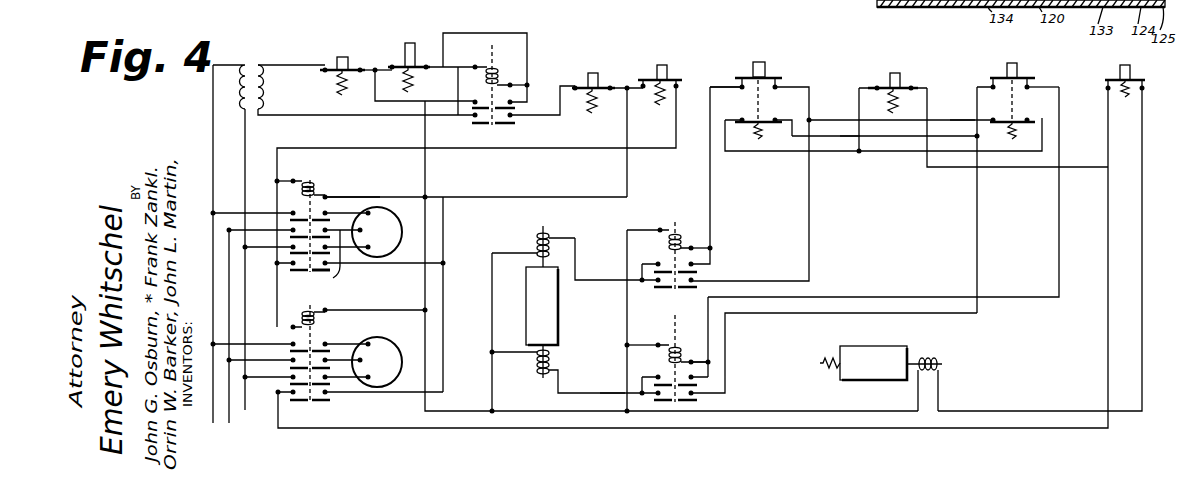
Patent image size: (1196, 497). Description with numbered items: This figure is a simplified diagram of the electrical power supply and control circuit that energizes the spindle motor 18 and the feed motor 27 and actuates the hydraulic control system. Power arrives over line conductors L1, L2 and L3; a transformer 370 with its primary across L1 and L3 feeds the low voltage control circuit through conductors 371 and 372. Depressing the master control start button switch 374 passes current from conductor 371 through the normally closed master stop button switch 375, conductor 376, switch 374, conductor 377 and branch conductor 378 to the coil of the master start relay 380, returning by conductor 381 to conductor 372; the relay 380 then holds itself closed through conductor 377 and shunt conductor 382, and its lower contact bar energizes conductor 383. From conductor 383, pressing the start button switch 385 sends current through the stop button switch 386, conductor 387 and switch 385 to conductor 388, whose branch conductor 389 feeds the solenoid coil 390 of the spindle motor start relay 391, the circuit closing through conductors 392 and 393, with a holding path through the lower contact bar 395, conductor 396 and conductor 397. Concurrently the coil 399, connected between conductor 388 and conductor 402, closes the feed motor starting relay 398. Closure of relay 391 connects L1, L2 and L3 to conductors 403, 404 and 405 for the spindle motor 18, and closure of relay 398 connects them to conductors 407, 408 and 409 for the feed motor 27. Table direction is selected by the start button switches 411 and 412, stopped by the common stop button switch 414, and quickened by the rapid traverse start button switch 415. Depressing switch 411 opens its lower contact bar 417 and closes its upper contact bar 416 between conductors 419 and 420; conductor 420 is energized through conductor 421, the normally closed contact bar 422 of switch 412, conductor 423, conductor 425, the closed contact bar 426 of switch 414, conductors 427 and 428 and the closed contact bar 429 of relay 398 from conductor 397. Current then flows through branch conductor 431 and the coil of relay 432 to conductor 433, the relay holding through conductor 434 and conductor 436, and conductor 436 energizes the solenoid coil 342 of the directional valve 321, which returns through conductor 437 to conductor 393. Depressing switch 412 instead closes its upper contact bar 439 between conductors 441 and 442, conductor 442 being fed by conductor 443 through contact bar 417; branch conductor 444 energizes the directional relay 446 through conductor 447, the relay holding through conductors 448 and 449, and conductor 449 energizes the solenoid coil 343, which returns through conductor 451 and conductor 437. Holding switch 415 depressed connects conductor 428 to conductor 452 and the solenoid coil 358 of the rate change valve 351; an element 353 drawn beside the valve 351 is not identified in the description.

The line conductor L1 is at (213, 273).
The line conductor L2 is at (230, 270).
The line conductor L3 is at (246, 300).
The transformer 370 is at (257, 63).
The conductor 371 is at (280, 71).
The conductor 372 is at (302, 117).
The master control start button switch 374 is at (404, 42).
The master stop button switch 375 is at (335, 55).
The conductor 376 is at (375, 68).
The conductor 377 is at (485, 33).
The branch conductor 378 is at (522, 83).
The master start relay 380 is at (498, 62).
The conductor 381 is at (458, 86).
The shunt conductor 382 is at (389, 101).
The conductor 383 is at (541, 115).
The start button switch 385 is at (668, 67).
The stop button switch 386 is at (594, 71).
The conductor 387 is at (628, 86).
The conductor 388 is at (279, 161).
The branch conductor 389 is at (282, 184).
The solenoid coil 390 is at (319, 184).
The spindle motor start relay 391 is at (304, 277).
The conductor 392 is at (382, 196).
The conductor 393 is at (428, 165).
The lower closed contact bar 395 is at (327, 273).
The conductor 396 is at (412, 263).
The conductor 397 is at (492, 197).
The feed motor starting relay 398 is at (273, 401).
The coil 399 is at (320, 321).
The conductor 402 is at (388, 292).
The conductor 403 is at (337, 212).
The conductor 404 is at (342, 259).
The conductor 405 is at (348, 247).
The conductor 407 is at (348, 344).
The conductor 408 is at (344, 388).
The conductor 409 is at (376, 390).
The spindle motor 18 is at (392, 228).
The feed motor 27 is at (398, 350).
The start button switch 411 is at (782, 35).
The start button switch 412 is at (1001, 61).
The common stop button switch 414 is at (907, 71).
The rapid traverse start button switch 415 is at (1137, 69).
The upper contact bar 416 is at (738, 78).
The lower contact bar 417 is at (756, 116).
The conductor 419 is at (710, 108).
The conductor 420 is at (809, 90).
The conductor 421 is at (966, 100).
The normally closed contact bar 422 is at (1007, 140).
The conductor 423 is at (898, 152).
The conductor 425 is at (860, 90).
The closed contact bar 426 is at (878, 76).
The conductor 427 is at (939, 70).
The conductor 428 is at (1108, 322).
The closed contact bar 429 is at (291, 397).
The branch conductor 431 is at (710, 248).
The relay 432 is at (682, 220).
The conductor 433 is at (642, 225).
The conductor 434 is at (640, 264).
The conductor 436 is at (585, 236).
The conductor 437 is at (492, 289).
The normally open upper contact bar 439 is at (1028, 84).
The conductor 441 is at (1059, 226).
The conductor 442 is at (975, 132).
The conductor 443 is at (857, 135).
The branch conductor 444 is at (715, 362).
The directional relay 446 is at (681, 343).
The conductor 447 is at (638, 343).
The conductor 448 is at (650, 364).
The conductor 449 is at (610, 393).
The conductor 451 is at (509, 356).
The conductor 452 is at (1142, 247).
The directional valve 321 is at (564, 311).
The solenoid coil 342 is at (536, 245).
The solenoid coil 343 is at (536, 372).
The rate change valve 351 is at (899, 346).
The return spring 353 is at (820, 368).
The solenoid coil 358 is at (940, 354).